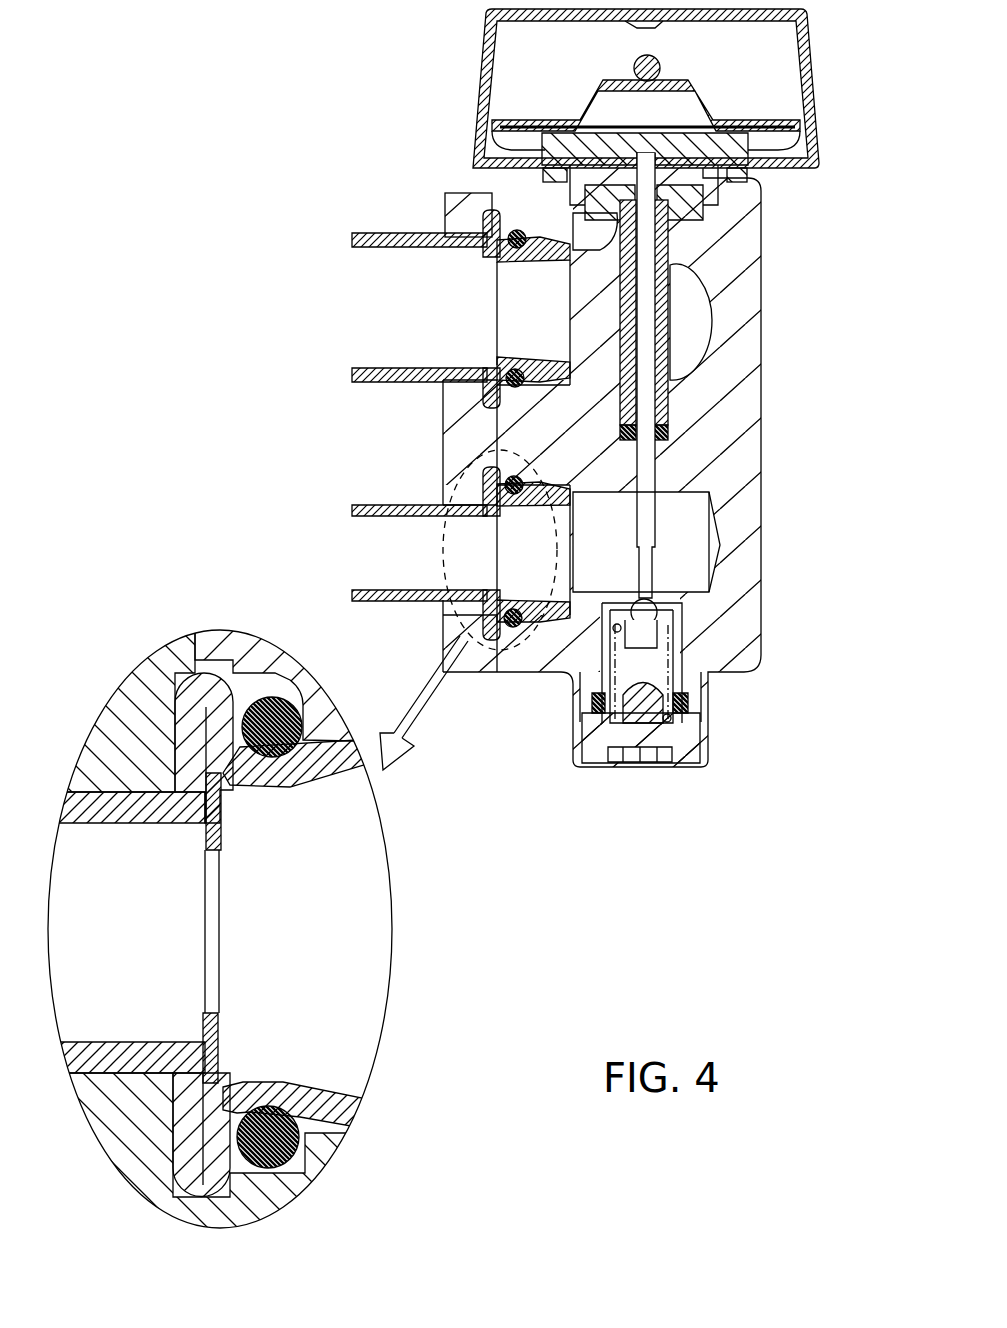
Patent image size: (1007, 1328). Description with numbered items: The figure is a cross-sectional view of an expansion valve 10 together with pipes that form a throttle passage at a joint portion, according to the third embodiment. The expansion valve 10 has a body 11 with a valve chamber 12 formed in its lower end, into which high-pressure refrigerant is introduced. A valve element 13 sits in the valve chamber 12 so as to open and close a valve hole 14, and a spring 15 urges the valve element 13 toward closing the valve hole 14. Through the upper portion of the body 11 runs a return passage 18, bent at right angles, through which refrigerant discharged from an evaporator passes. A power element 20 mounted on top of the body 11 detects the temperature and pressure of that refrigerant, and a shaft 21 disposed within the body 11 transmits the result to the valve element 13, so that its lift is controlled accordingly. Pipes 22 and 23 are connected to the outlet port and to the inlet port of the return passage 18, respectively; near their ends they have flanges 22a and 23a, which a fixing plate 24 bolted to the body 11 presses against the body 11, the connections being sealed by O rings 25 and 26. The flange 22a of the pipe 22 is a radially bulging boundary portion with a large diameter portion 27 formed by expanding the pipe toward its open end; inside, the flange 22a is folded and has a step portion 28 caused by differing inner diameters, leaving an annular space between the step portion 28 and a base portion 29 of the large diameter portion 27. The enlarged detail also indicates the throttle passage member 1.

The throttle passage member 1 is at (205, 925).
The expansion valve 10 is at (782, 225).
The body 11 is at (500, 437).
The valve chamber 12 is at (641, 752).
The valve element 13 is at (645, 628).
The valve hole 14 is at (662, 586).
The spring 15 is at (668, 676).
The return passage 18 is at (696, 326).
The power element 20 is at (548, 110).
The shaft 21 is at (650, 458).
The pipe 22 is at (352, 508).
The flange 22a is at (476, 483).
The pipe 23 is at (378, 235).
The flange 23a is at (478, 228).
The fixing plate 24 is at (488, 195).
The O ring 25 is at (513, 628).
The O ring 26 is at (450, 413).
The large diameter portion 27 is at (320, 1090).
The step portion 28 is at (223, 792).
The base portion 29 is at (223, 1082).